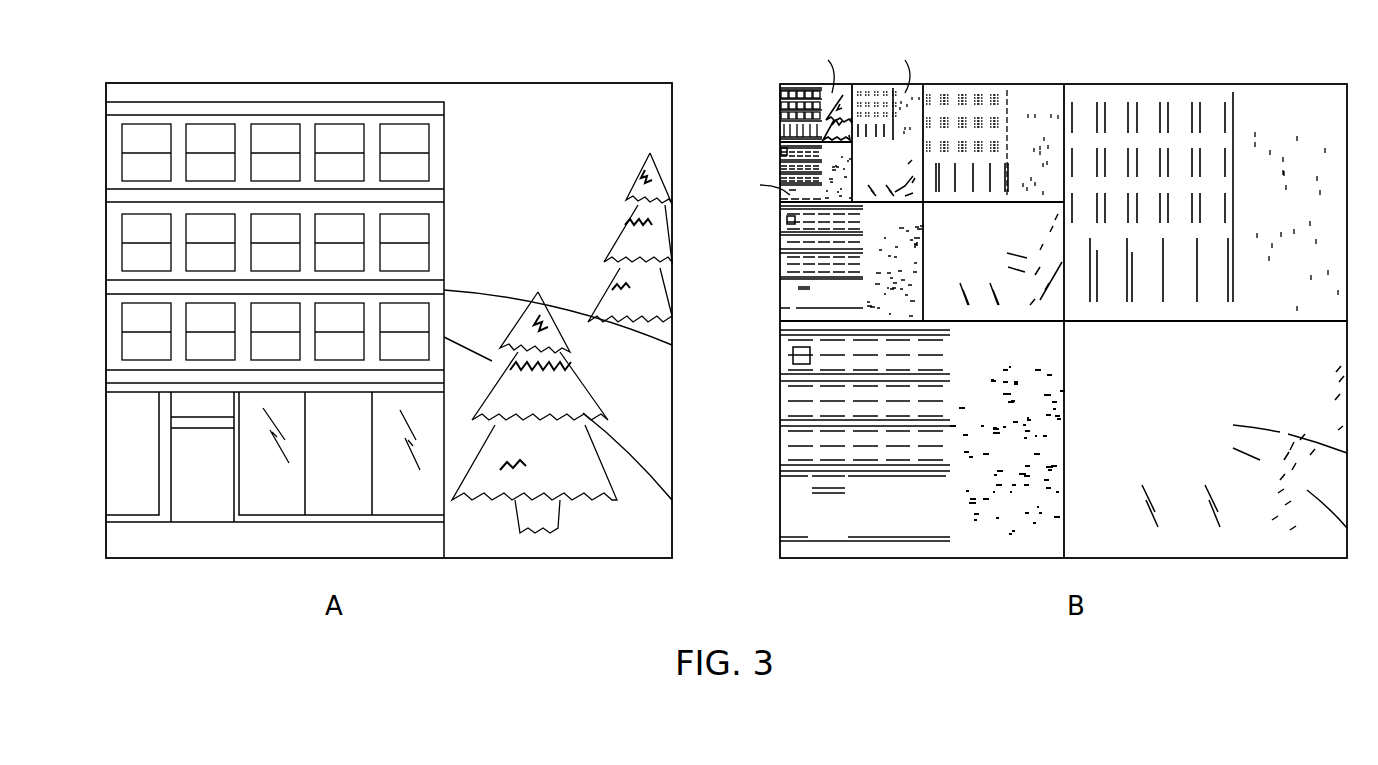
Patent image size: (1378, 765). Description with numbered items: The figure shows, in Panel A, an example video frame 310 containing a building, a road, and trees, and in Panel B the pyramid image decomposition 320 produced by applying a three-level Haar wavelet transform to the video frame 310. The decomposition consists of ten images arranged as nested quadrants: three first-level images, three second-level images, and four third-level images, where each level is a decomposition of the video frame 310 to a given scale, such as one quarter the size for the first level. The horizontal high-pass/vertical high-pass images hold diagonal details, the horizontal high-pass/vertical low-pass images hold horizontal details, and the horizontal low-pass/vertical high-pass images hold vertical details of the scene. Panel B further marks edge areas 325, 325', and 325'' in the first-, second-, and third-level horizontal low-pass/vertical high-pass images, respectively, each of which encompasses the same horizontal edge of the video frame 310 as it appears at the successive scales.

The video frame 310 is at (335, 83).
The wavelet-transformed (multi-level decomposed) image 320 is at (1097, 84).
The edge area 325 is at (767, 347).
The edge area 325' is at (755, 215).
The edge area 325'' is at (749, 131).